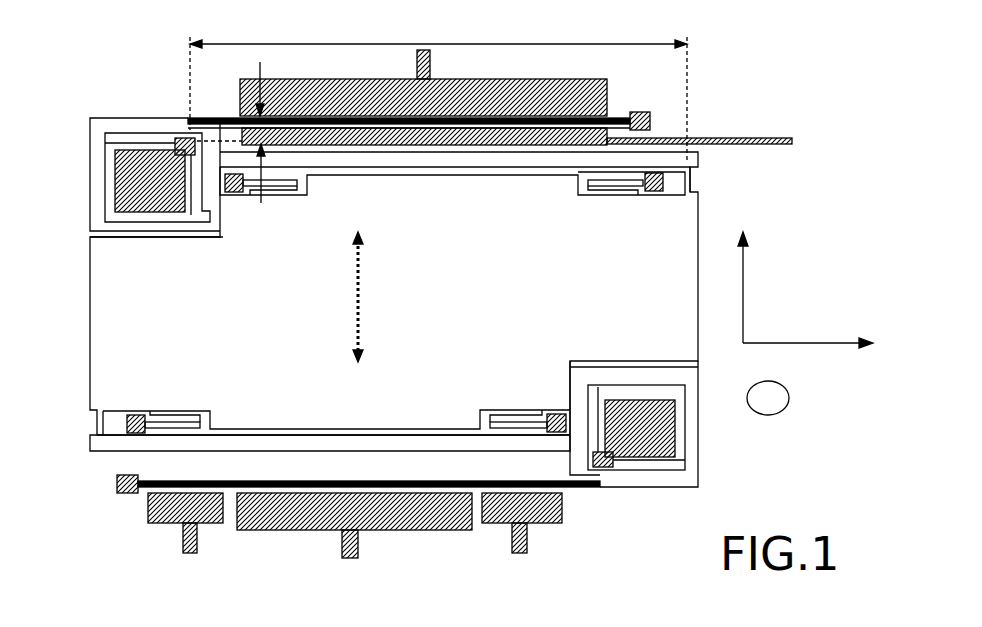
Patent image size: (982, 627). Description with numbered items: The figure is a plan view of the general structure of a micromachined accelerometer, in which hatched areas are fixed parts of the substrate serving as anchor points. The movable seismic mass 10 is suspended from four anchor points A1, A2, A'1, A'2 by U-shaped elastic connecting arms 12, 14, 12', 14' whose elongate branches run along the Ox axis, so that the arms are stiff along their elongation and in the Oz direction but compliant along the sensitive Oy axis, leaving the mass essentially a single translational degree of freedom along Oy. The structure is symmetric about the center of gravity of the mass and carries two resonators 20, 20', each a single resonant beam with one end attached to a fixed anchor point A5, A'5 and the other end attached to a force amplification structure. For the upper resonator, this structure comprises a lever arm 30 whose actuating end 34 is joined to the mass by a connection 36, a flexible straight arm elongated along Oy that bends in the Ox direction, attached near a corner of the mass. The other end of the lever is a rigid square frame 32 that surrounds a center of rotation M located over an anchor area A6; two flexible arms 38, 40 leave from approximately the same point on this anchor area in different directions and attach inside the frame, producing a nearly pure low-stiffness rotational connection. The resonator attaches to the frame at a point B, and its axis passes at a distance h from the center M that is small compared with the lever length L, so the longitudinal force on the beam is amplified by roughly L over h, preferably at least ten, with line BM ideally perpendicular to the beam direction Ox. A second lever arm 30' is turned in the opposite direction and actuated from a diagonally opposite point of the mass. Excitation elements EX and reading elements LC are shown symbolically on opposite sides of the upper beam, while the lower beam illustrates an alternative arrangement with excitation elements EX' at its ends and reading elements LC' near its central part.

The seismic mass 10 is at (90, 337).
The U-shaped elastic connecting arm 12 is at (287, 205).
The U-shaped elastic connecting arm 14 is at (595, 205).
The resonator 20 is at (419, 92).
The lever arm 30 is at (455, 189).
The rigid square frame 32 is at (93, 150).
The actuating end 34 is at (670, 158).
The connection 36 is at (692, 177).
The flexible arm 38 is at (130, 140).
The flexible arm 40 is at (207, 238).
The anchor point A1 is at (232, 193).
The anchor point A2 is at (655, 192).
The anchor point A5 is at (652, 118).
The anchor area A6 is at (190, 143).
The center of rotation M is at (178, 142).
The attachment point B is at (188, 118).
The length of the lever arm L is at (438, 91).
The distance h is at (267, 128).
The excitation elements EX is at (423, 83).
The reading elements LC is at (424, 98).
The U-shaped elastic connecting arm 12' is at (187, 401).
The U-shaped elastic connecting arm 14' is at (499, 404).
The second resonator 20' is at (369, 471).
The second lever arm 30' is at (333, 459).
The anchor point A'1 is at (124, 400).
The anchor point A'2 is at (605, 424).
The anchor point A'5 is at (96, 490).
The excitation elements EX' is at (350, 524).
The reading elements LC' is at (354, 533).
The Ox axis Ox is at (808, 328).
The Oy axis Oy is at (741, 272).
The Oz axis Oz is at (787, 407).